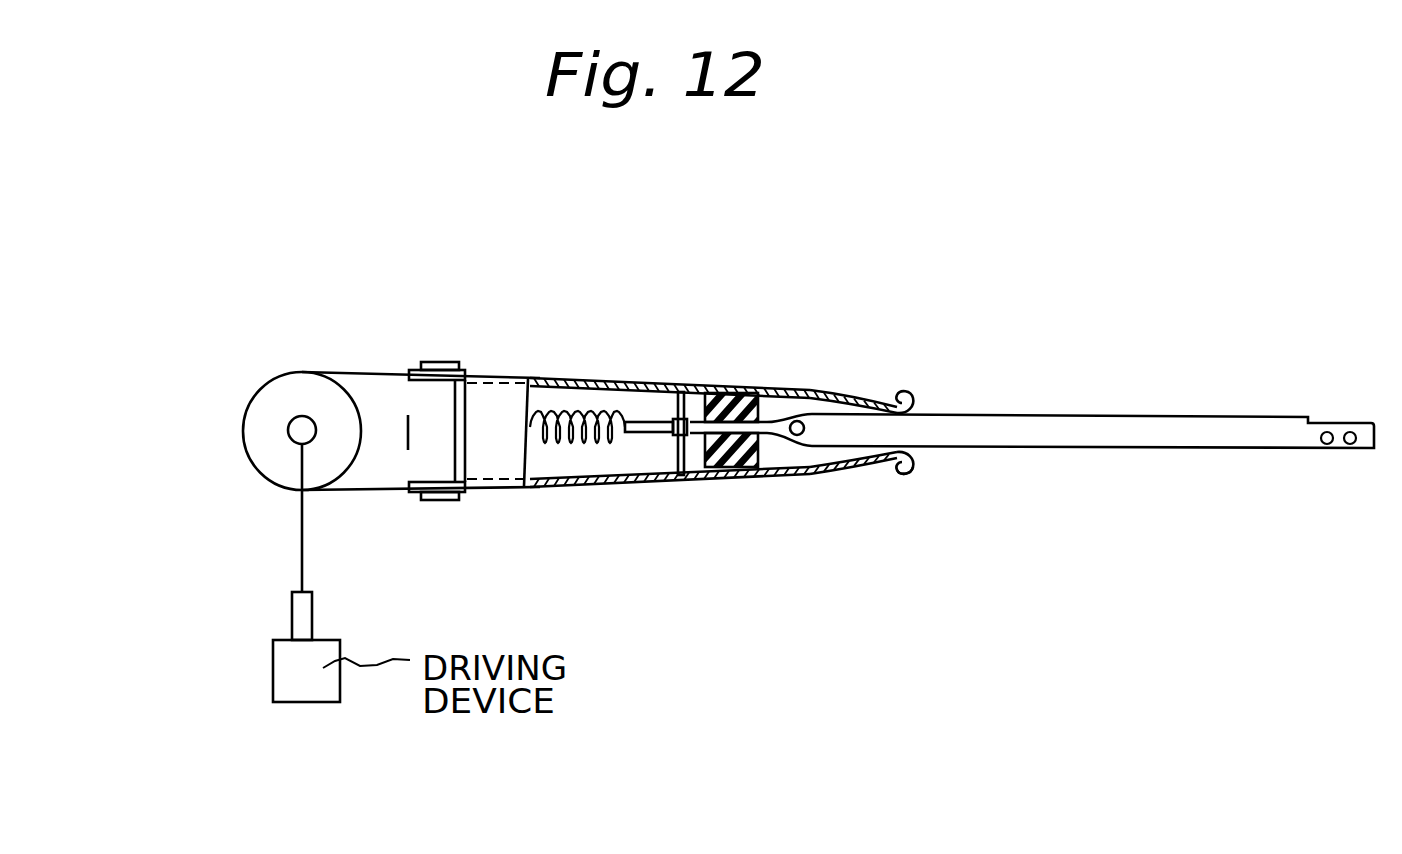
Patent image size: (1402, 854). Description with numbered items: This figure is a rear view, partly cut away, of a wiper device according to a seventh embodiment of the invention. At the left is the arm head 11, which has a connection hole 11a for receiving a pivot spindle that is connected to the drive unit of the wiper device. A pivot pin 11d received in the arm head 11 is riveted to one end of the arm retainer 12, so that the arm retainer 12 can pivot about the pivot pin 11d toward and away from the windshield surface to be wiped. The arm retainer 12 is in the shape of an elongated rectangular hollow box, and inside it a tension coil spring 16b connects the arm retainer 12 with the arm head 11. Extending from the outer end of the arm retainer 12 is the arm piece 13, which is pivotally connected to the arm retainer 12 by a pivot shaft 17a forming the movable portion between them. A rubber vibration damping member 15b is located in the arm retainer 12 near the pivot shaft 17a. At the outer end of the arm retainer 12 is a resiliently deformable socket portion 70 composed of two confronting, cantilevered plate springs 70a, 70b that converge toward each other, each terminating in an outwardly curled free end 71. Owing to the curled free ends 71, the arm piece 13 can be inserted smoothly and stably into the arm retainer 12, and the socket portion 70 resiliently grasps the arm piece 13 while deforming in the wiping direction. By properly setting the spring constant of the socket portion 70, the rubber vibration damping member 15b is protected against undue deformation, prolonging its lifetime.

The arm head 11 is at (296, 372).
The connection hole 11a is at (289, 428).
The pivot pin 11d is at (443, 362).
The arm retainer 12 is at (603, 380).
The arm piece 13 is at (1113, 415).
The rubber vibration damping member 15b is at (712, 470).
The tension coil spring 16b is at (545, 443).
The pivot shaft 17a is at (797, 421).
The socket portion 70 is at (872, 475).
The plate spring 70a is at (888, 403).
The plate spring 70b is at (890, 472).
The outwardly curled free end 71 is at (914, 460).